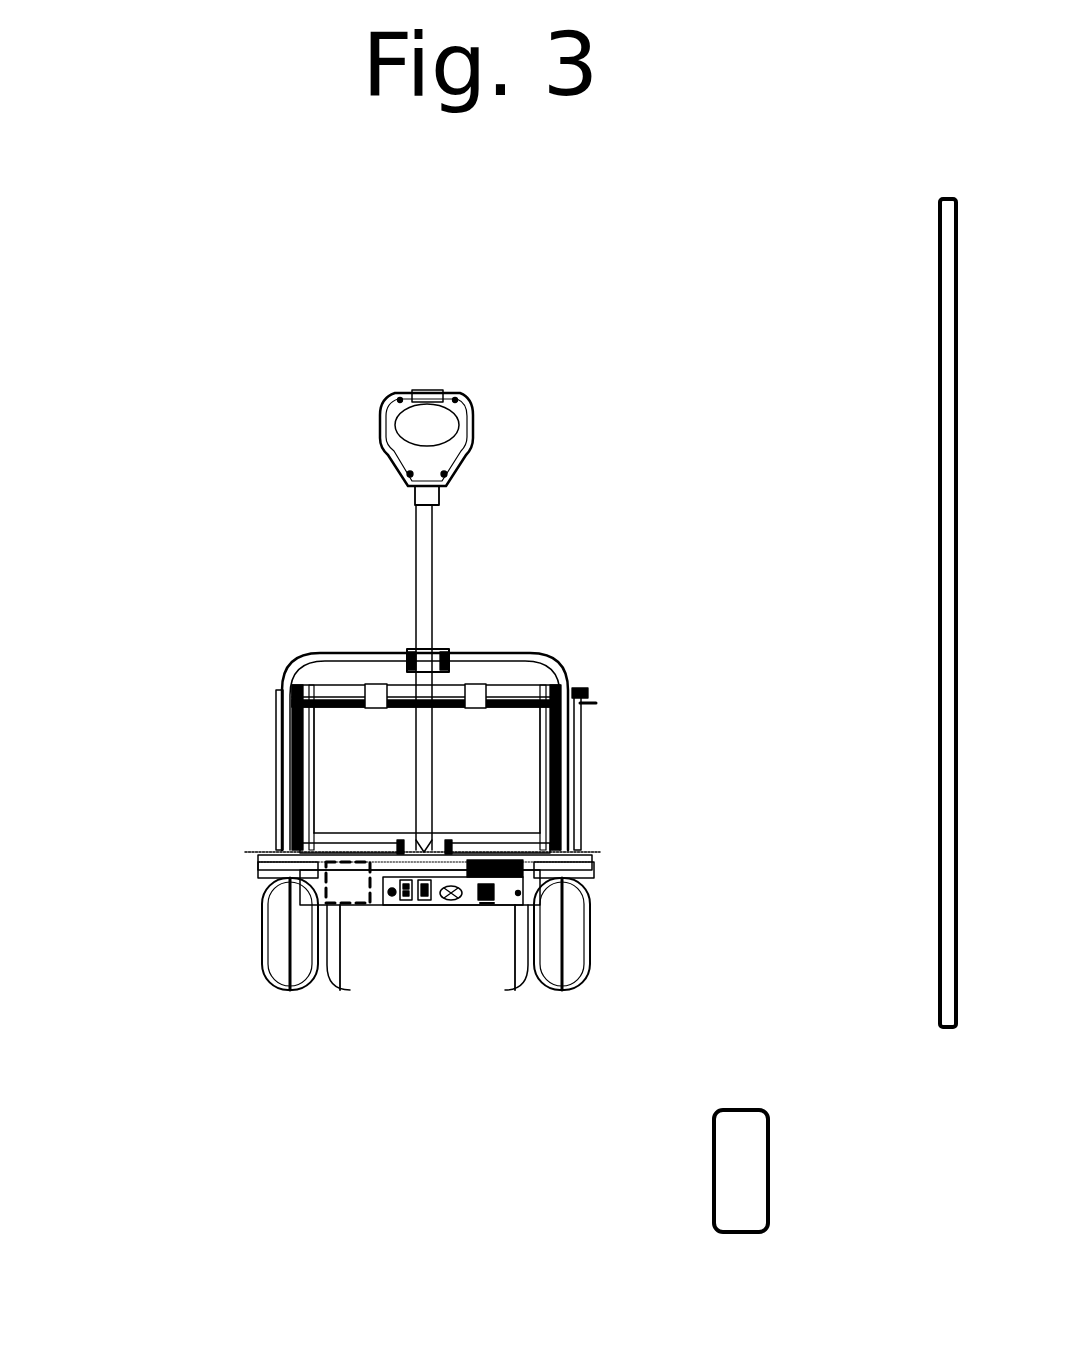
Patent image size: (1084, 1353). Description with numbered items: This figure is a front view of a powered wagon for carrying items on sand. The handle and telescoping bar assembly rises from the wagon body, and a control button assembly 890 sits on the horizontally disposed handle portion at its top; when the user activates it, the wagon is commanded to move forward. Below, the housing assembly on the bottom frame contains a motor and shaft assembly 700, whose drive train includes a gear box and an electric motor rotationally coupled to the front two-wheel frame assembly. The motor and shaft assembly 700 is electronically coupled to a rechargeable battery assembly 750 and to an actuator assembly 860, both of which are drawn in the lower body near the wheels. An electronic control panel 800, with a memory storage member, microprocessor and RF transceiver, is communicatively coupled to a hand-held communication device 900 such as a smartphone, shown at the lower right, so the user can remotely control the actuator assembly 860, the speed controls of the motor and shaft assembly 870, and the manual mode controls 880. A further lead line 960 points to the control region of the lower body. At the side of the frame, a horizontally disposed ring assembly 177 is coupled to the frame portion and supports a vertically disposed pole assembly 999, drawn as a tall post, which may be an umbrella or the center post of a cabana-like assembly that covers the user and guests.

The horizontally disposed ring assembly 177 is at (590, 695).
The motor and shaft assembly 700 is at (347, 857).
The rechargeable battery assembly 750 is at (577, 853).
The electronic control panel 800 is at (400, 913).
The actuator assembly 860 is at (387, 907).
The motor and shaft assembly 870 is at (412, 917).
The manual mode controls 880 is at (425, 917).
The control button assembly 890 is at (470, 408).
The hand-held communication device 900 is at (740, 1193).
The leader to component 960 is at (487, 905).
The vertically disposed pole assembly 999 is at (937, 243).